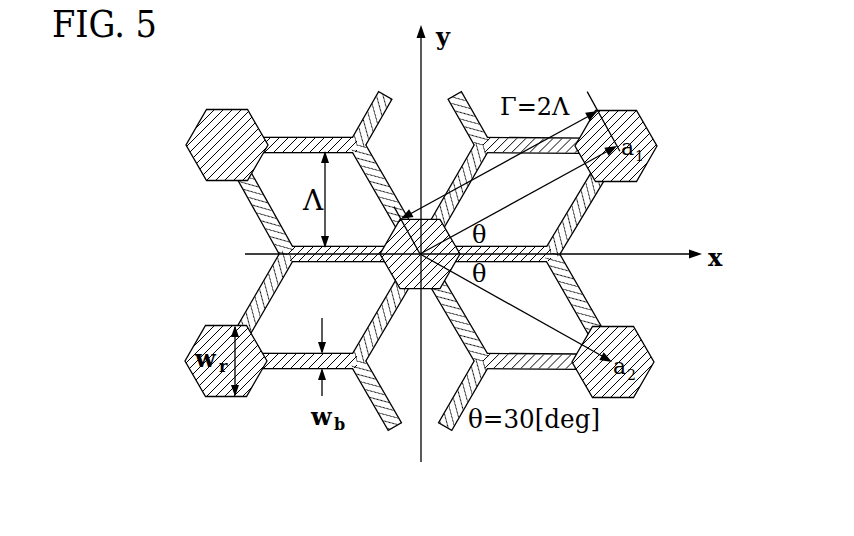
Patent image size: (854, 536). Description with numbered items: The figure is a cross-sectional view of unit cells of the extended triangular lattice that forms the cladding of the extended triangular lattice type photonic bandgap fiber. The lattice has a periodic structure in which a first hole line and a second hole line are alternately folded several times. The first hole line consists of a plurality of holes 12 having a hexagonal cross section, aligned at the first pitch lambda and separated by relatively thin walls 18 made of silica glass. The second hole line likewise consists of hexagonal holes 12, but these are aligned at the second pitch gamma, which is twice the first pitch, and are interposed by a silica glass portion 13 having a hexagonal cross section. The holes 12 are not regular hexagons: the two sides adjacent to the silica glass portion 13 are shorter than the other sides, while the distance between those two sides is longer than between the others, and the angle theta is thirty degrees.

The hole 12 is at (292, 214).
The silica glass portion 13 is at (217, 120).
The wall 18 is at (299, 137).